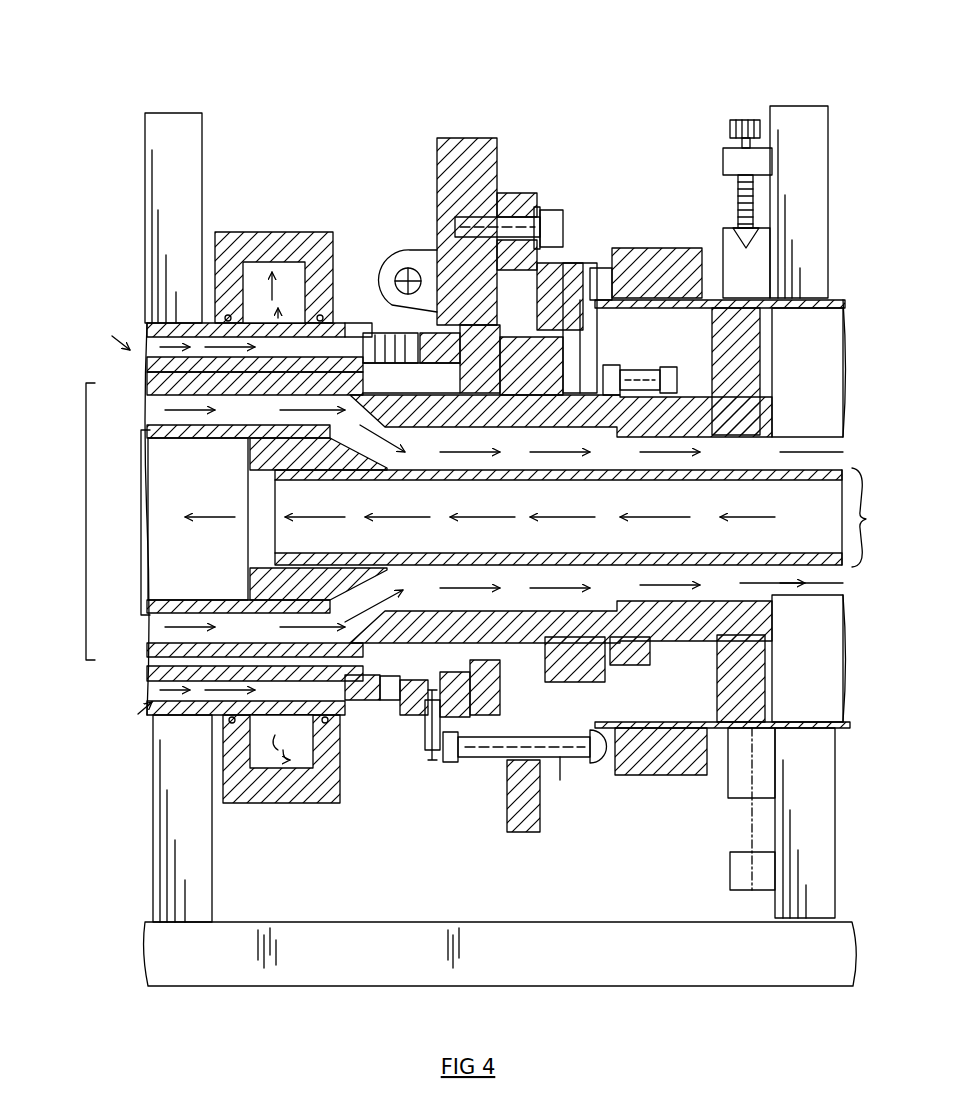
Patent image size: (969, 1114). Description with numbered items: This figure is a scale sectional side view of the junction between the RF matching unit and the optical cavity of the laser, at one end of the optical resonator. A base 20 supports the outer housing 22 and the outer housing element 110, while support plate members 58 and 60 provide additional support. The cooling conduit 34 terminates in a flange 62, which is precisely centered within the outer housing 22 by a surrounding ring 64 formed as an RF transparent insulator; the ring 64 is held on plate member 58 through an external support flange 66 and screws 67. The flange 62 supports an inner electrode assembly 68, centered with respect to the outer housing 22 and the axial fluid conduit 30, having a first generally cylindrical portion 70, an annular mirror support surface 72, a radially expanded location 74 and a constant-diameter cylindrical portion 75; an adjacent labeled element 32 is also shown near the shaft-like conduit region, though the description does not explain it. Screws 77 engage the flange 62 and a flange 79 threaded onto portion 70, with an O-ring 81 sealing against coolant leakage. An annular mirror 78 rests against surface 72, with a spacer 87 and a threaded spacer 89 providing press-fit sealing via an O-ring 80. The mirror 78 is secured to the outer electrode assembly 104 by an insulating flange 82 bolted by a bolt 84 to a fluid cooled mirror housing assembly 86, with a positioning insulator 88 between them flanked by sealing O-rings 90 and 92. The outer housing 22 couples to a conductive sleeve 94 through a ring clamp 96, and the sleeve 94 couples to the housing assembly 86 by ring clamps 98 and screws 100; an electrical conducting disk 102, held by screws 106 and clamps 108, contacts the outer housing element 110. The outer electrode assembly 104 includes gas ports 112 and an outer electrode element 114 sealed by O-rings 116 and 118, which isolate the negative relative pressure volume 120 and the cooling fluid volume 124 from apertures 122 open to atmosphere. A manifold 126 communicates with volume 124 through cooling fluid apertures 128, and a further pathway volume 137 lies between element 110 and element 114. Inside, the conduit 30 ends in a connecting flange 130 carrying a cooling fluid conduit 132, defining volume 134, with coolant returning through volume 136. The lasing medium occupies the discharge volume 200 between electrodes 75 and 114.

The base 20 is at (717, 962).
The outer housing 22 is at (785, 306).
The axial fluid conduit 30 is at (860, 526).
The shaft 32 is at (788, 508).
The cooling conduit 34 is at (842, 598).
The support plate member 58 is at (803, 106).
The support plate member 60 is at (192, 113).
The flange 62 is at (755, 620).
The surrounding ring 64 is at (748, 378).
The external support flange 66 is at (718, 228).
The screws 67 is at (732, 124).
The inner electrode assembly 68 is at (86, 510).
The first generally cylindrical portion 70 is at (625, 775).
The annular mirror support surface 72 is at (470, 215).
The radially expanded location 74 is at (385, 280).
The cylindrical inner electrode portion 75 is at (212, 240).
The screws 77 is at (664, 367).
The annular mirror 78 is at (470, 690).
The flange 79 is at (600, 658).
The O-ring 80 is at (500, 760).
The O-ring 81 is at (640, 660).
The insulating flange 82 is at (535, 790).
The bolt 84 is at (560, 758).
The fluid cooled mirror housing assembly 86 is at (590, 750).
The spacer 87 is at (582, 358).
The positioning insulator 88 is at (530, 215).
The spacer 89 is at (606, 366).
The sealing O-ring 90 is at (575, 275).
The sealing O-ring 92 is at (507, 235).
The conductive sleeve 94 is at (605, 268).
The ring clamp 96 is at (680, 255).
The ring clamps 98 is at (552, 247).
The screws 100 is at (545, 207).
The electrical conducting disk 102 is at (418, 333).
The outer electrode assembly 104 is at (147, 330).
The screws 106 is at (452, 718).
The clamps 108 is at (395, 265).
The outer housing element 110 is at (212, 820).
The gas ports 112 is at (400, 345).
The outer electrode element 114 is at (150, 672).
The O-ring 116 is at (425, 705).
The O-ring 118 is at (385, 702).
The negative relative pressure volume 120 is at (152, 662).
The apertures 122 is at (405, 716).
The cooling fluid containing volume 124 is at (155, 690).
The annular cooling fluid manifold 126 is at (255, 240).
The cooling fluid apertures 128 is at (282, 270).
The connecting flange 130 is at (255, 455).
The cooling fluid conduit 132 is at (141, 520).
The volume 134 is at (198, 519).
The return conduit volume 136 is at (641, 517).
The annular cooling fluid pathway volume 137 is at (120, 336).
The discharge volume 200 is at (148, 375).